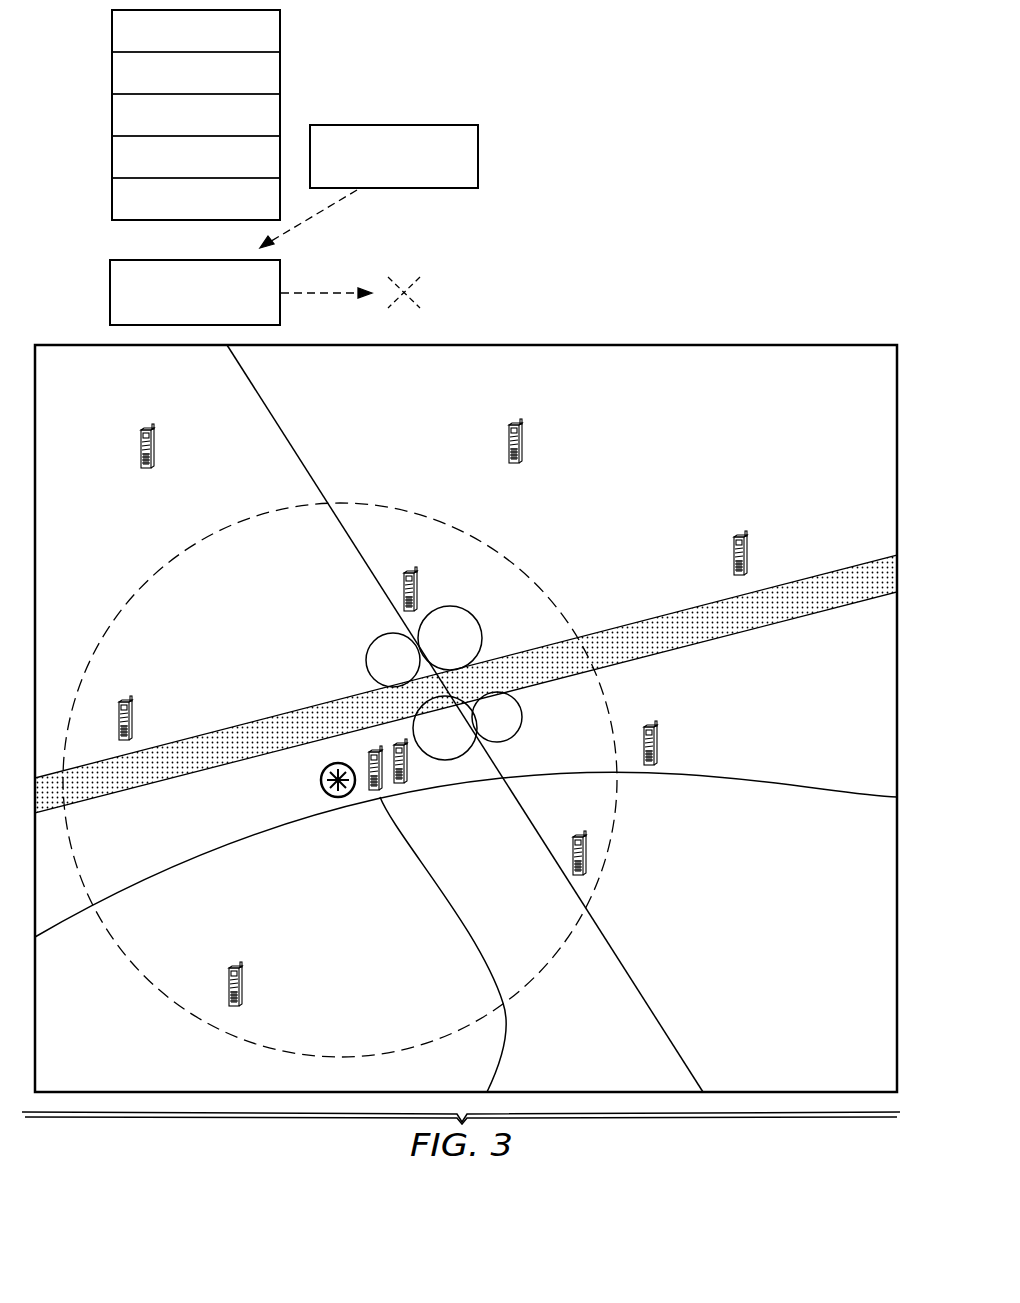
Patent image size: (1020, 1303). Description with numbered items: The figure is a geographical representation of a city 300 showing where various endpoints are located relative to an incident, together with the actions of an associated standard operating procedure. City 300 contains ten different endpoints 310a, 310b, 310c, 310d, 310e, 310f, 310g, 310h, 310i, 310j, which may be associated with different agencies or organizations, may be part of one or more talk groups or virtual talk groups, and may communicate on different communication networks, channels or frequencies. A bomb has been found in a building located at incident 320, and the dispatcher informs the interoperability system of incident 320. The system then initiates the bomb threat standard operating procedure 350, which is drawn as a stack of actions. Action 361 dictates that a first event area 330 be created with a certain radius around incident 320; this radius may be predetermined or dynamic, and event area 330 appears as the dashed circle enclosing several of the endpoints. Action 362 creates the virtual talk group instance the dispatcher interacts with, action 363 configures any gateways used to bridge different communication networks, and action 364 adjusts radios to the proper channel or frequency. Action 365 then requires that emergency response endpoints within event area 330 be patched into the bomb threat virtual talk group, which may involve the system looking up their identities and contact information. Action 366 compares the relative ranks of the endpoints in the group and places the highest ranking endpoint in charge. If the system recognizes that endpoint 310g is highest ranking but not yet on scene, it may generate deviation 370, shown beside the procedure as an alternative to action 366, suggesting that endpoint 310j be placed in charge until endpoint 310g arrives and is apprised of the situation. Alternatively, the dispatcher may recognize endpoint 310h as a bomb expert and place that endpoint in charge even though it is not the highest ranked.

The city 300 is at (690, 336).
The endpoint 310a is at (144, 469).
The endpoint 310b is at (508, 447).
The endpoint 310c is at (740, 531).
The endpoint 310d is at (660, 742).
The endpoint 310e is at (578, 832).
The endpoint 310f is at (236, 962).
The endpoint 310g is at (135, 720).
The endpoint 310h is at (421, 590).
The endpoint 310i is at (412, 762).
The endpoint 310j is at (376, 793).
The incident 320 is at (321, 780).
The event area 330 is at (378, 505).
The bomb threat standard operating procedure 350 is at (336, 56).
The action 361 is at (112, 27).
The action 362 is at (112, 69).
The action 363 is at (112, 111).
The action 364 is at (112, 154).
The action 365 is at (112, 196).
The action 366 is at (110, 290).
The deviation 370 is at (403, 125).